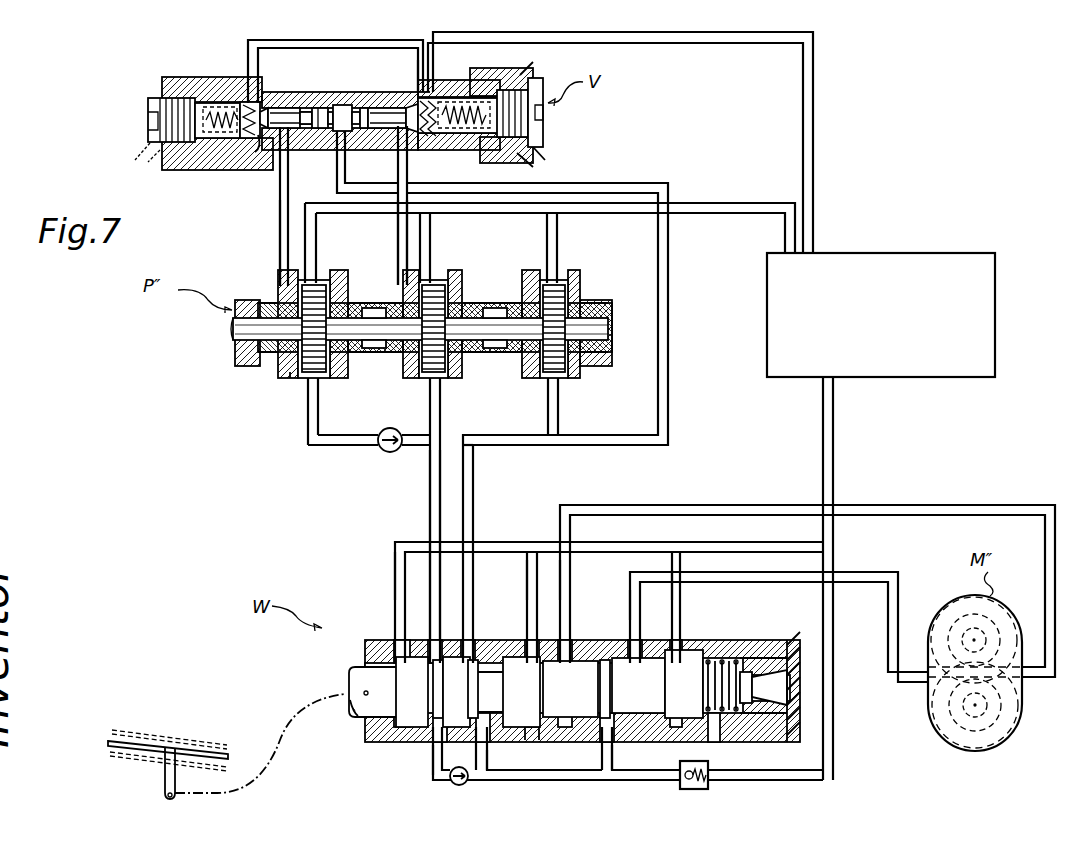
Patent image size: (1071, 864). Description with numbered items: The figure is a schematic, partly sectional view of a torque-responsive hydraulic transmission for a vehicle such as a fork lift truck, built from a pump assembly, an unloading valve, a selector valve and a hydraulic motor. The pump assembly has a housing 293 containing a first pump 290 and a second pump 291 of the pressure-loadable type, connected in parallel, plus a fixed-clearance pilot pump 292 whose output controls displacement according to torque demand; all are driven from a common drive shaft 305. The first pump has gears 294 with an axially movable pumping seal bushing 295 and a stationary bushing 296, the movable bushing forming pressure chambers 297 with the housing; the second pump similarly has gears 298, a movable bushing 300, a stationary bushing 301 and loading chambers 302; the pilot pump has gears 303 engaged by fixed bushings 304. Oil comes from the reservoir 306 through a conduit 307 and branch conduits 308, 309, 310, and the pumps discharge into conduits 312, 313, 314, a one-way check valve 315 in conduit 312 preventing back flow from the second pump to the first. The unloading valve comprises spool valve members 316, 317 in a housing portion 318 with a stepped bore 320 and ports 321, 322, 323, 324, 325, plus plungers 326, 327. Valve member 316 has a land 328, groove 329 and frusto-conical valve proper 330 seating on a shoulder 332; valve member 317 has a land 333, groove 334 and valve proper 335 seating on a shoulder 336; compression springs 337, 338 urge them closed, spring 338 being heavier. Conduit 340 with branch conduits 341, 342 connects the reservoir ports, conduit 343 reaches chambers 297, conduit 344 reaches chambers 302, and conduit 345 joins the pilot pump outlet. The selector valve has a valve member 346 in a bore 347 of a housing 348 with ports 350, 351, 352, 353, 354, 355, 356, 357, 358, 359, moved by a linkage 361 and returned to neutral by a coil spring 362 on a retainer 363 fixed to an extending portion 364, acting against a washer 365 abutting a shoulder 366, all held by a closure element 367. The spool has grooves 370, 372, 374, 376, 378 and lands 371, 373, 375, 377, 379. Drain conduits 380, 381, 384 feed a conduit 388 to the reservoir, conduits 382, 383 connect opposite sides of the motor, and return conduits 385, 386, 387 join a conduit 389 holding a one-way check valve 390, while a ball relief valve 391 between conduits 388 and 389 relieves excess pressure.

The first pump 290 is at (354, 261).
The second pump 291 is at (492, 263).
The pilot or control pump 292 is at (602, 263).
The housing 293 is at (274, 297).
The gears 294 is at (316, 292).
The axially movable pumping seal bushing 295 is at (292, 385).
The stationary pumping seal bushing 296 is at (318, 398).
The pressure chambers 297 is at (262, 372).
The gears 298 is at (434, 292).
The axially movable pumping seal bushing 300 is at (428, 385).
The stationary pumping seal bushing 301 is at (490, 355).
The pressure loading chambers 302 is at (390, 355).
The gears 303 is at (556, 290).
The fixed pump bushings 304 is at (580, 360).
The common drive shaft 305 is at (236, 328).
The reservoir 306 is at (884, 257).
The conduit 307 is at (748, 199).
The branch conduit 308 is at (322, 206).
The branch conduit 309 is at (431, 232).
The branch conduit 310 is at (558, 231).
The conduit 312 is at (316, 446).
The conduit 313 is at (441, 418).
The conduit 314 is at (562, 421).
The one-way check valve 315 is at (390, 452).
The spool valve member 316 is at (300, 65).
The spool valve member 317 is at (392, 67).
The housing portion 318 is at (156, 160).
The bore 320 is at (205, 103).
The port 321 is at (253, 100).
The port 322 is at (430, 98).
The port 323 is at (280, 150).
The port 324 is at (337, 135).
The port 325 is at (412, 135).
The plunger 326 is at (320, 106).
The plunger 327 is at (345, 104).
The land 328 is at (300, 106).
The groove 329 is at (305, 128).
The frusto-conical valve proper 330 is at (232, 134).
The shoulder 332 is at (262, 140).
The land 333 is at (364, 130).
The groove 334 is at (390, 130).
The frusto-conical valve proper 335 is at (420, 130).
The shoulder 336 is at (428, 100).
The coiled compression spring 337 is at (182, 160).
The coiled compression spring 338 is at (476, 102).
The conduit 340 is at (636, 31).
The branch conduit 341 is at (248, 45).
The branch conduit 342 is at (421, 55).
The conduit 343 is at (279, 222).
The conduit 344 is at (408, 206).
The conduit 345 is at (558, 189).
The valve member 346 is at (343, 688).
The bore 347 is at (352, 712).
The housing 348 is at (364, 651).
The port 350 is at (398, 645).
The port 351 is at (428, 645).
The port 352 is at (470, 645).
The port 353 is at (530, 645).
The port 354 is at (568, 645).
The port 355 is at (634, 645).
The port 356 is at (677, 645).
The port 357 is at (604, 732).
The port 358 is at (525, 733).
The port 359 is at (432, 730).
The linkage 361 is at (190, 734).
The coil spring 362 is at (758, 718).
The movable spring retainer 363 is at (788, 705).
The extending portion 364 is at (790, 680).
The washer 365 is at (716, 725).
The shoulder 366 is at (708, 657).
The closure element 367 is at (795, 638).
The groove 370 is at (412, 692).
The land 371 is at (433, 674).
The groove 372 is at (456, 692).
The land 373 is at (476, 728).
The groove 374 is at (494, 697).
The land 375 is at (521, 692).
The groove 376 is at (570, 689).
The land 377 is at (600, 691).
The groove 378 is at (638, 685).
The land 379 is at (684, 684).
The conduit 380 is at (394, 566).
The conduit 381 is at (526, 566).
The conduit 382 is at (571, 561).
The conduit 383 is at (757, 571).
The conduit 384 is at (681, 590).
The conduit 385 is at (613, 760).
The conduit 386 is at (488, 768).
The conduit 387 is at (432, 772).
The conduit 388 is at (822, 524).
The conduit 389 is at (574, 781).
The one-way check valve 390 is at (452, 784).
The spring urged ball relief valve 391 is at (710, 786).